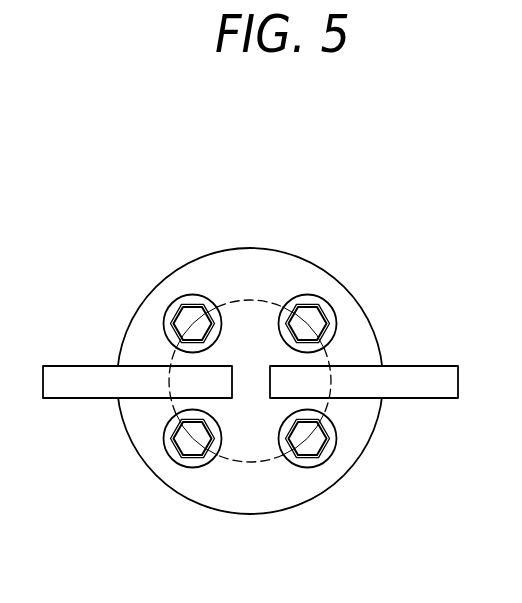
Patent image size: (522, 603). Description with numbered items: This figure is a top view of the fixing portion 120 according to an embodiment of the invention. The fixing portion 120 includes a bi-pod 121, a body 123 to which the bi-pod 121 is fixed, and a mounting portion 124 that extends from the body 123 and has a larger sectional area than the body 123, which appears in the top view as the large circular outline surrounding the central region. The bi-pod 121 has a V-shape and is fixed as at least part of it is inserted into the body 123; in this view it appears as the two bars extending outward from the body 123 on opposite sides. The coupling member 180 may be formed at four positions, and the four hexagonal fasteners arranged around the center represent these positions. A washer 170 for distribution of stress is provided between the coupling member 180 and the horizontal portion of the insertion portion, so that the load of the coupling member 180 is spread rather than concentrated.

The fixing portion 120 is at (250, 353).
The bi-pod 121 is at (432, 373).
The body 123 is at (248, 428).
The mounting portion 124 is at (261, 258).
The washer 170 is at (173, 312).
The coupling member 180 is at (309, 319).